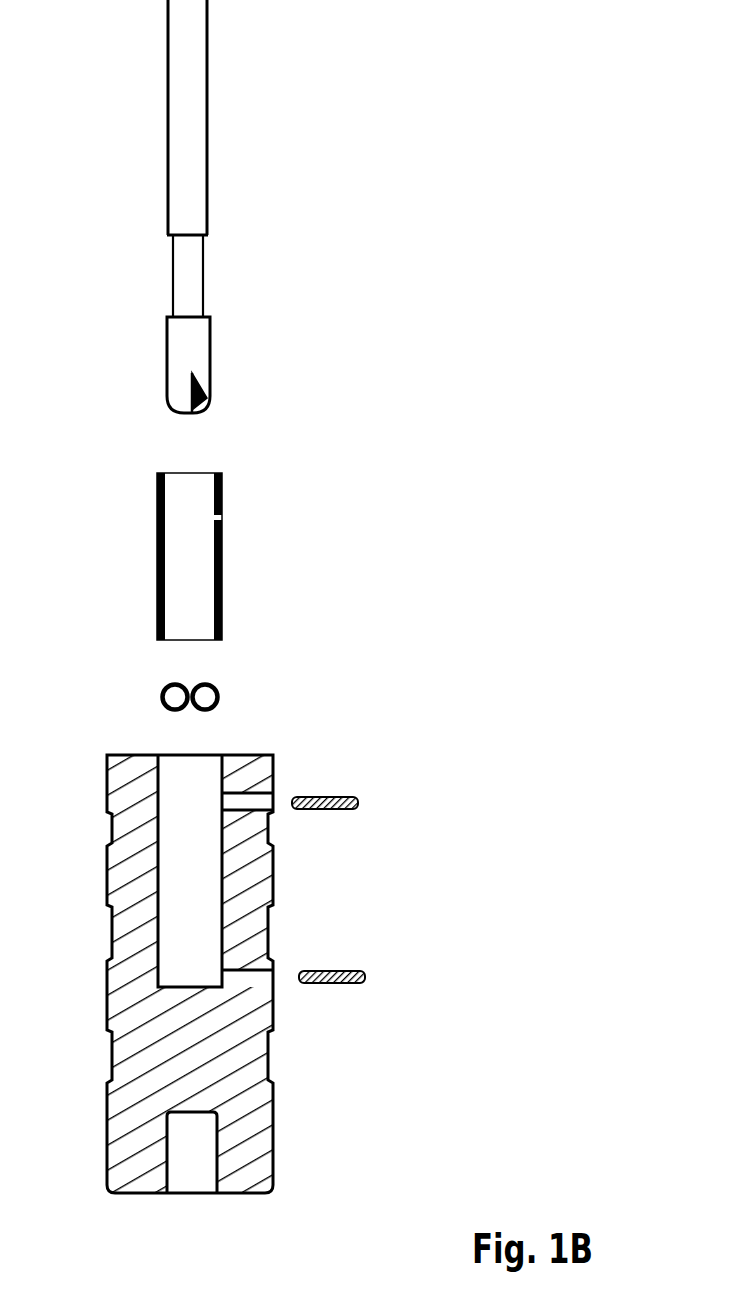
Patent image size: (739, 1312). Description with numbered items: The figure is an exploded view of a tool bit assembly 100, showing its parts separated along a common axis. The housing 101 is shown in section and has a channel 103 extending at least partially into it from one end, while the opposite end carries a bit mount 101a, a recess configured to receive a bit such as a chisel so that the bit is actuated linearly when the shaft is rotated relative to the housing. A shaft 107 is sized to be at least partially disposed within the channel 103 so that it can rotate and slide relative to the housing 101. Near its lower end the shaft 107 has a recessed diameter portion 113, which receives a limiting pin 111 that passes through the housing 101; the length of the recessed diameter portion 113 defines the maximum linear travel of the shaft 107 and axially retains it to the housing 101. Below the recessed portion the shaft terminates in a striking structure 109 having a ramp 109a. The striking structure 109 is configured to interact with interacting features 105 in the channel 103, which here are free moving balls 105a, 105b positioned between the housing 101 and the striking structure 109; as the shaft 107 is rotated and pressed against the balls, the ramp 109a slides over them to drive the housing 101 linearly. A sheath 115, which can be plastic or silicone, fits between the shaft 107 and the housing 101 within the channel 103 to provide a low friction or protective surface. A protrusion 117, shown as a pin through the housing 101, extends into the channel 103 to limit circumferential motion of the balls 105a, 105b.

The tool bit assembly 100 is at (366, 461).
The housing 101 is at (123, 818).
The bit mount 101a is at (192, 1175).
The channel 103 is at (182, 778).
The interacting features 105 is at (230, 690).
The ball 105a is at (212, 683).
The ball 105b is at (172, 686).
The shaft 107 is at (190, 143).
The striking structure 109 is at (170, 416).
The ramp 109a is at (208, 413).
The limiting pin 111 is at (332, 796).
The recessed diameter portion 113 is at (220, 279).
The sheath 115 is at (222, 568).
The protrusion 117 is at (332, 970).